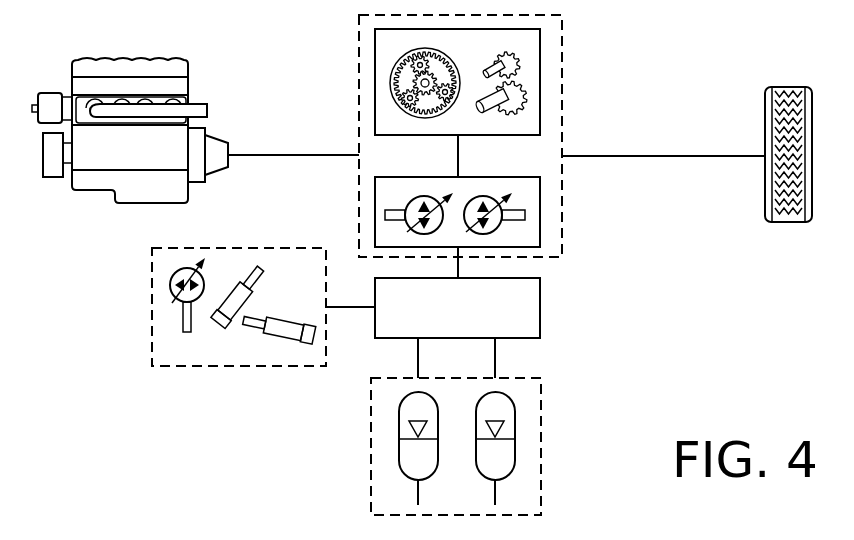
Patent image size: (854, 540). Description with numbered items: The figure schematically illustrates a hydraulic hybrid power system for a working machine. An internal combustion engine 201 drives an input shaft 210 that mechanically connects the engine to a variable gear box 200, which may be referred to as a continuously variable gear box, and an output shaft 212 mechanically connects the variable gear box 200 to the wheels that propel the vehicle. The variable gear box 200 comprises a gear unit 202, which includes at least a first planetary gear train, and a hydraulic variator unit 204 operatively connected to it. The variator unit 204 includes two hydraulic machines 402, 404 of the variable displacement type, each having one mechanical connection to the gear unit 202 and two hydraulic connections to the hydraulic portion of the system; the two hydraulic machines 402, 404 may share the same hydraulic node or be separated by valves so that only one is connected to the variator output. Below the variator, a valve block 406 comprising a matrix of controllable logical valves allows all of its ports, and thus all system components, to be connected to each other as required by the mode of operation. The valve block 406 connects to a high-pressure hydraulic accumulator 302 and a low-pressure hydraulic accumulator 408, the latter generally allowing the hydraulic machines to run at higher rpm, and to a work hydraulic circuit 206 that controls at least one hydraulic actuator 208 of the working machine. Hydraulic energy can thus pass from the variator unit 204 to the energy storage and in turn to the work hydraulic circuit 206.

The variable gear box 200 is at (348, 70).
The internal combustion engine 201 is at (125, 163).
The gear unit 202 is at (540, 103).
The hydraulic variator unit 204 is at (458, 225).
The work hydraulic circuit 206 is at (190, 333).
The hydraulic actuator 208 is at (278, 346).
The input shaft 210 is at (310, 154).
The output shaft 212 is at (718, 156).
The high-pressure hydraulic accumulator 302 is at (399, 423).
The hydraulic machine 402 is at (406, 205).
The hydraulic machine 404 is at (503, 205).
The valve block 406 is at (540, 305).
The low-pressure hydraulic accumulator 408 is at (515, 423).